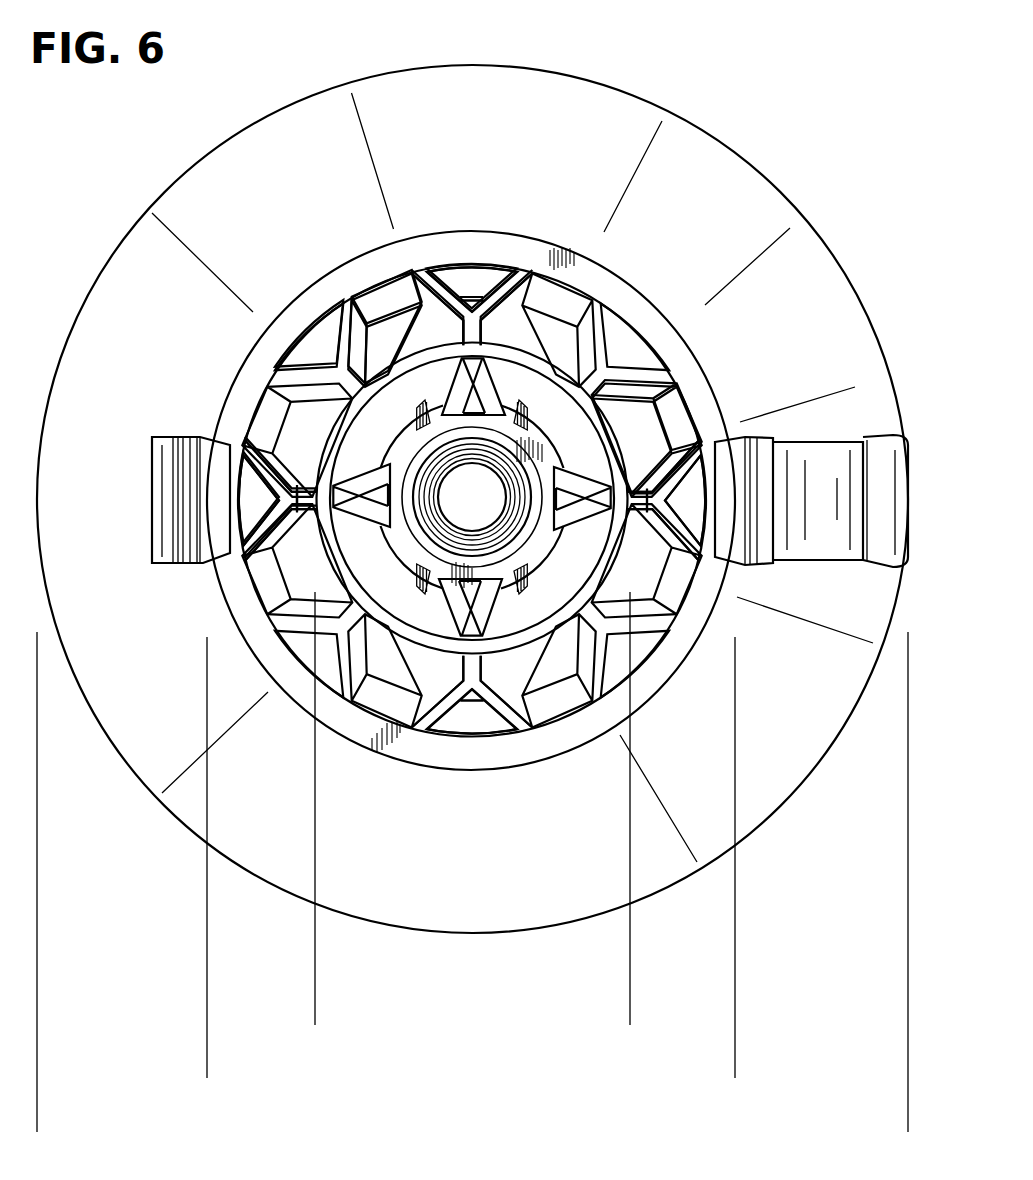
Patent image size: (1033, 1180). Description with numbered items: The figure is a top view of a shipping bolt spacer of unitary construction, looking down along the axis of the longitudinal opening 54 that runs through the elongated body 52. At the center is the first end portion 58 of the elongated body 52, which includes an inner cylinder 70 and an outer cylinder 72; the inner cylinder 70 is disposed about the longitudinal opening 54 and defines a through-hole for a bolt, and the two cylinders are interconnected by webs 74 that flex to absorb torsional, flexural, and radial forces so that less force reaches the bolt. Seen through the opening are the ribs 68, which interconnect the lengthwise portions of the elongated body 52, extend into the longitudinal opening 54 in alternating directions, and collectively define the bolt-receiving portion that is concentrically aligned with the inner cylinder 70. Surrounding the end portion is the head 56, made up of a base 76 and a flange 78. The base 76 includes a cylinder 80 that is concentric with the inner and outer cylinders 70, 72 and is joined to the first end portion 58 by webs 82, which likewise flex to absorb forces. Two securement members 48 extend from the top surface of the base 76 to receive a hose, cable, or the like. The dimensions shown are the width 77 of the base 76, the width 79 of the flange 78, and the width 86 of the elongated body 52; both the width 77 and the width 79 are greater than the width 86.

The securement members 48 is at (882, 452).
The elongated body 52 is at (523, 356).
The longitudinal opening 54 is at (445, 513).
The head 56 is at (592, 729).
The first end portion 58 is at (625, 447).
The ribs 68 is at (387, 447).
The inner cylinder 70 is at (533, 545).
The outer cylinder 72 is at (613, 558).
The webs 74 is at (340, 497).
The base 76 is at (680, 705).
The width 77 is at (221, 1060).
The flange 78 is at (738, 145).
The width 79 is at (894, 1115).
The cylinder 80 is at (663, 660).
The webs 82 is at (580, 653).
The width 86 is at (616, 1005).